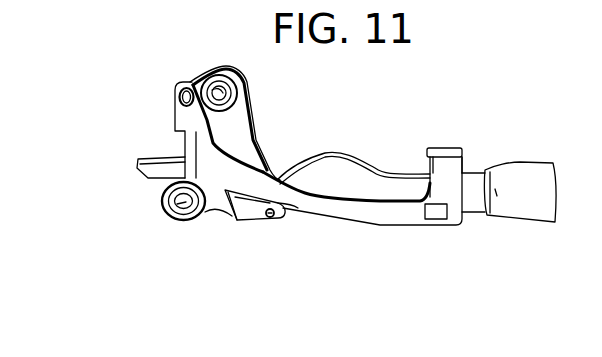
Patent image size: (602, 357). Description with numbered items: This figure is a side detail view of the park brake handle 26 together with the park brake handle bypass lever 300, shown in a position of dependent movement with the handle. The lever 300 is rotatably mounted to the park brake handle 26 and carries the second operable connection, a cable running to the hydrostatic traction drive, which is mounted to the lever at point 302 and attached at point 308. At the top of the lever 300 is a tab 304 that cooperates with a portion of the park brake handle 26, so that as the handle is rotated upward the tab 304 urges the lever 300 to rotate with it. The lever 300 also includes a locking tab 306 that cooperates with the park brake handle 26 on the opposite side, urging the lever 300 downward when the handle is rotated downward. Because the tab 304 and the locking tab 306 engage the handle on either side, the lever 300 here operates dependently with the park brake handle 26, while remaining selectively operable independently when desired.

The park brake handle 26 is at (333, 153).
The lever 300 is at (326, 217).
The point 302 is at (183, 203).
The tab 304 is at (447, 148).
The locking tab 306 is at (437, 216).
The point 308 is at (270, 217).